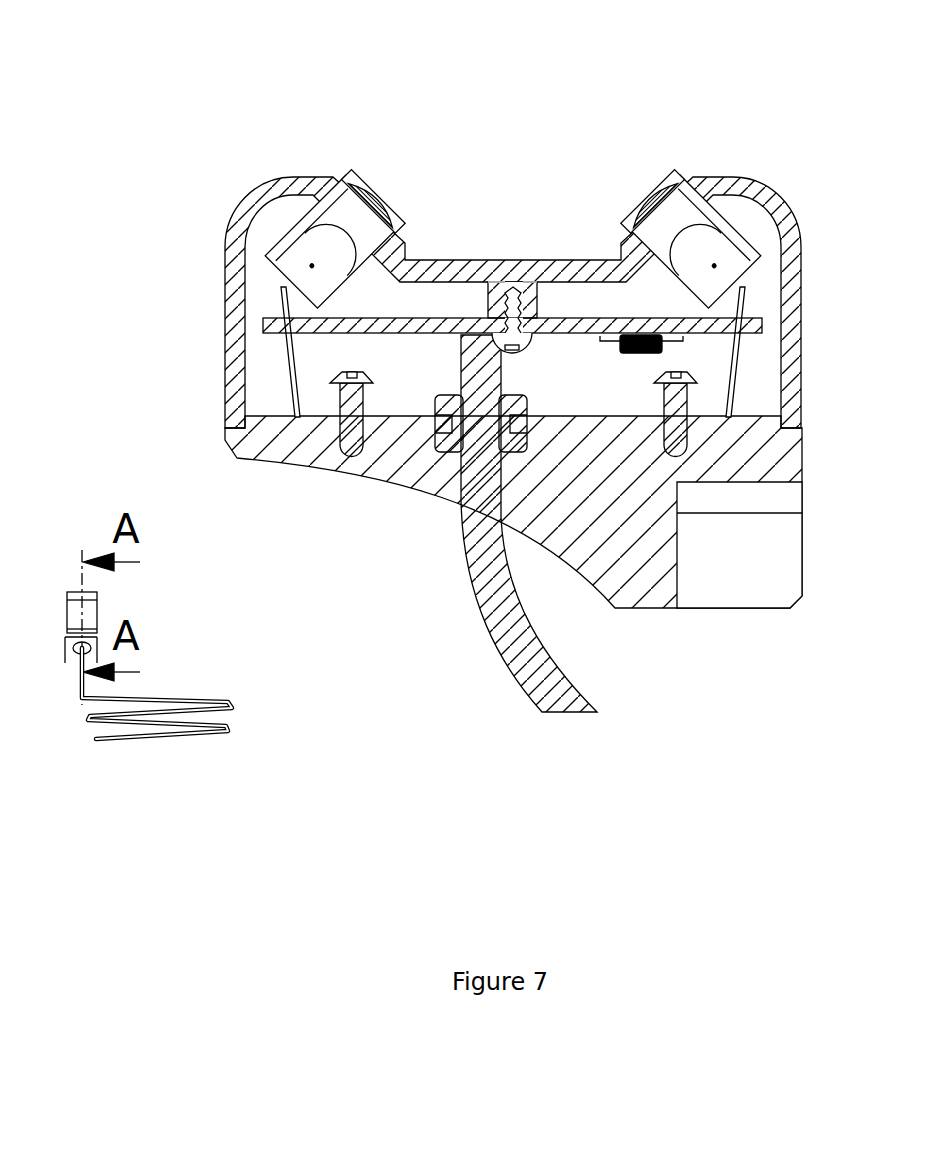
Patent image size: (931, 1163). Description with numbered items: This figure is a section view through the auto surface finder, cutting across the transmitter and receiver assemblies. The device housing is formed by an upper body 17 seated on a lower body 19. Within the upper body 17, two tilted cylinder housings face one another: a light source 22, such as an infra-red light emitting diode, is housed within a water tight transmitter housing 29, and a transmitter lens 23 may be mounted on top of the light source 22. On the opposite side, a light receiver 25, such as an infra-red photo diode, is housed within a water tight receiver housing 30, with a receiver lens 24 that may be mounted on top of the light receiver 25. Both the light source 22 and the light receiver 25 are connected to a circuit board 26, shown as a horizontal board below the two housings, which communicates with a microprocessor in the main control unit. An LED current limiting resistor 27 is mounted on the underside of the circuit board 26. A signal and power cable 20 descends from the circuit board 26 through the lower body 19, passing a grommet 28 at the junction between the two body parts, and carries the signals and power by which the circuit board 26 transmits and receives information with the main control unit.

The upper body 17 is at (262, 180).
The lower body 19 is at (738, 610).
The signal and power cable 20 is at (485, 625).
The light source 22 is at (330, 226).
The transmitter lens 23 is at (370, 188).
The receiver lens 24 is at (657, 192).
The light receiver 25 is at (697, 225).
The circuit board 26 is at (767, 312).
The LED current limiting resistor 27 is at (678, 345).
The grommet 28 is at (436, 457).
The transmitter housing 29 is at (351, 178).
The receiver housing 30 is at (683, 175).